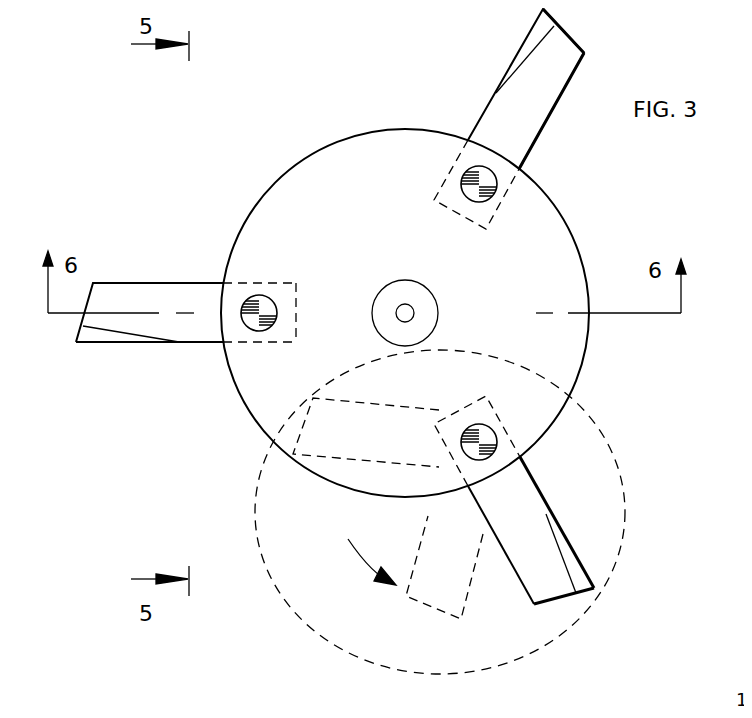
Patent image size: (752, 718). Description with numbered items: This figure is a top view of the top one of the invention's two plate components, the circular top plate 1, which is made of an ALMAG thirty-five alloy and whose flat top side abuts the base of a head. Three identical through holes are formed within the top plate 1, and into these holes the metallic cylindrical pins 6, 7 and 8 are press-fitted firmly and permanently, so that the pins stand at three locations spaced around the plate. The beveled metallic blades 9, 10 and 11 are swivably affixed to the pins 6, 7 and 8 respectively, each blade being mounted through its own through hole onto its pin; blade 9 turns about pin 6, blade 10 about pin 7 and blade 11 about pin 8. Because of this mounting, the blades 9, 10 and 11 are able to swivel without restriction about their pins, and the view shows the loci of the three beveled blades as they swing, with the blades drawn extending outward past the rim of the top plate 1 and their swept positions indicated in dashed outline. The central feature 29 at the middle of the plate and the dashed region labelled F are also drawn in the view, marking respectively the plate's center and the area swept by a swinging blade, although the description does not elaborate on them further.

The top plate 1 is at (566, 268).
The cylindrical pin 6 is at (483, 433).
The cylindrical pin 7 is at (263, 305).
The cylindrical pin 8 is at (483, 175).
The beveled metallic blade 9 is at (532, 498).
The beveled metallic blade 10 is at (133, 292).
The beveled metallic blade 11 is at (560, 50).
The hub 29 is at (420, 308).
The field of rotation F is at (610, 450).